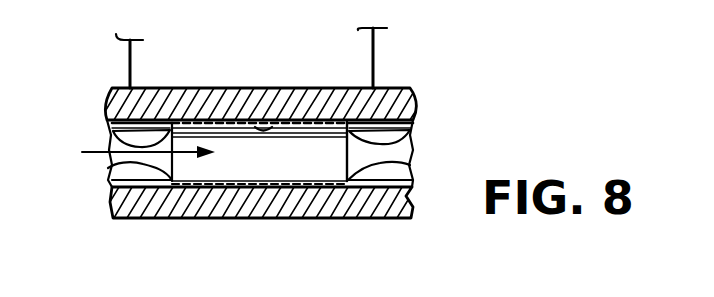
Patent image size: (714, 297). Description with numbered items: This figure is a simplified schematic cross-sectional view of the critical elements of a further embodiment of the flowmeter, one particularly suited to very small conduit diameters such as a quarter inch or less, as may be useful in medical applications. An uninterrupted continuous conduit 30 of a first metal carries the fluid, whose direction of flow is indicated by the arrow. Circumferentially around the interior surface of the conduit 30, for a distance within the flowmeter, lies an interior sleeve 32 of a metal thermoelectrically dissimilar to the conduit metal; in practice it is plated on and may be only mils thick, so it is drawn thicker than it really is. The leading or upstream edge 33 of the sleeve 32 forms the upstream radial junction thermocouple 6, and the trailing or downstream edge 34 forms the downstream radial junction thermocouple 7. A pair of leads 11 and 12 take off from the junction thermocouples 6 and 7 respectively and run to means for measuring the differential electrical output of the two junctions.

The upstream radial junction thermocouple 6 is at (113, 140).
The downstream radial junction thermocouple 7 is at (400, 140).
The lead 11 is at (133, 67).
The lead 12 is at (367, 65).
The conduit 30 is at (387, 88).
The interior sleeve 32 is at (285, 120).
The leading edge of the sleeve 33 is at (110, 177).
The trailing edge of the sleeve 34 is at (400, 160).